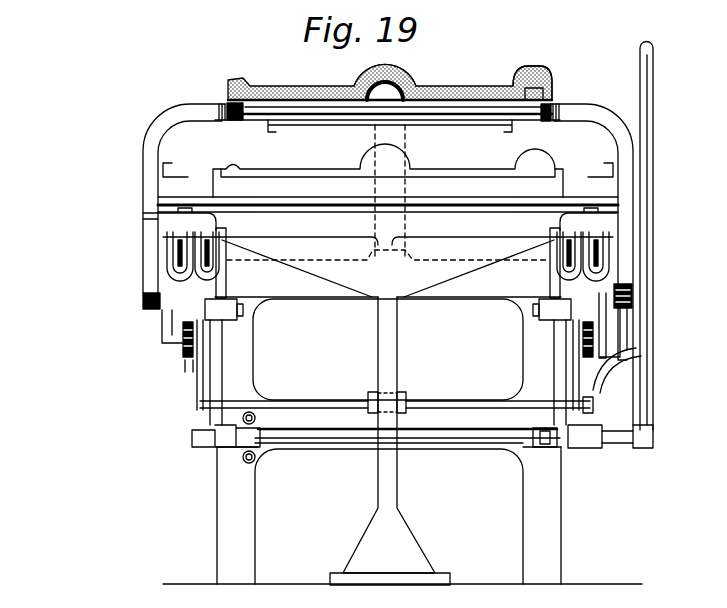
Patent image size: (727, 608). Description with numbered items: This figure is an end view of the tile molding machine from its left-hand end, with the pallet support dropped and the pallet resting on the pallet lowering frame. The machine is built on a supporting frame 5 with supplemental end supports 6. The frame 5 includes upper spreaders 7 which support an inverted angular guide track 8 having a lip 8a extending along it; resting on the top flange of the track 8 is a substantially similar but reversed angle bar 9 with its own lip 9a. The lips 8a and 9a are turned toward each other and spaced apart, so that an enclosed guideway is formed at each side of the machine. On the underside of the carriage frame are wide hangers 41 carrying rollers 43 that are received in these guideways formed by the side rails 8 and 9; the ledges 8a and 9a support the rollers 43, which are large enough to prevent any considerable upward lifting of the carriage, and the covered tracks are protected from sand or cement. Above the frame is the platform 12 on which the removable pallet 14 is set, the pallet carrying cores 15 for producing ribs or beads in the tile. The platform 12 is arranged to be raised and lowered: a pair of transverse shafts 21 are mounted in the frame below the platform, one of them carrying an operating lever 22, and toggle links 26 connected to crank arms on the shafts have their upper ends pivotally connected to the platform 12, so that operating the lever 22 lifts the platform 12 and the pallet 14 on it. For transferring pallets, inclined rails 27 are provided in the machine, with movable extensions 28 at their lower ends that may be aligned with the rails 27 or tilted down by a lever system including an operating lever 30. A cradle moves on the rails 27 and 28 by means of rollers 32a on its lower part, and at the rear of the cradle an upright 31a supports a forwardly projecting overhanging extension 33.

The supporting frame 5 is at (483, 447).
The supplemental end supports 6 is at (395, 487).
The upper spreaders 7 is at (353, 283).
The inverted angular guide track 8 is at (226, 242).
The lip 8a is at (200, 285).
The reversed angle bar 9 is at (170, 250).
The lip 9a is at (141, 302).
The platform 12 is at (468, 128).
The pallet 14 is at (452, 100).
The cores 15 is at (397, 83).
The transverse shafts 21 is at (330, 452).
The operating lever 22 is at (654, 62).
The toggle links 26 is at (187, 388).
The inclined rails 27 is at (185, 370).
The movable extensions 28 is at (187, 407).
The operating lever 30 is at (648, 387).
The upright 31a is at (147, 188).
The rollers 32a is at (183, 350).
The overhanging extension 33 is at (390, 125).
The wide hanger 41 is at (168, 312).
The rollers 43 is at (222, 236).